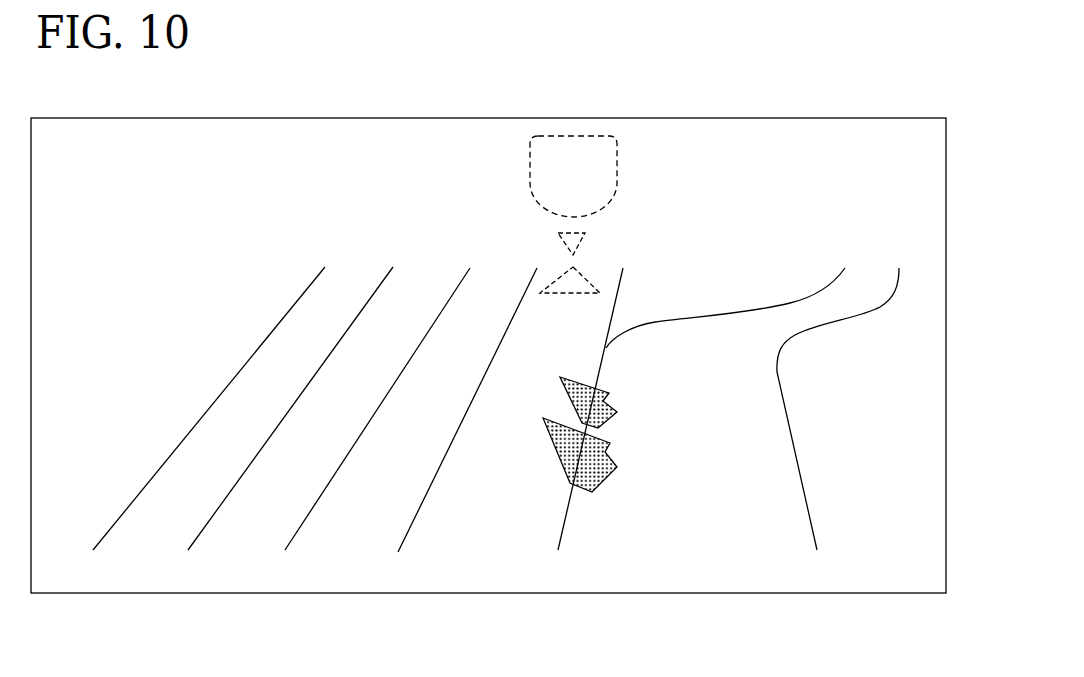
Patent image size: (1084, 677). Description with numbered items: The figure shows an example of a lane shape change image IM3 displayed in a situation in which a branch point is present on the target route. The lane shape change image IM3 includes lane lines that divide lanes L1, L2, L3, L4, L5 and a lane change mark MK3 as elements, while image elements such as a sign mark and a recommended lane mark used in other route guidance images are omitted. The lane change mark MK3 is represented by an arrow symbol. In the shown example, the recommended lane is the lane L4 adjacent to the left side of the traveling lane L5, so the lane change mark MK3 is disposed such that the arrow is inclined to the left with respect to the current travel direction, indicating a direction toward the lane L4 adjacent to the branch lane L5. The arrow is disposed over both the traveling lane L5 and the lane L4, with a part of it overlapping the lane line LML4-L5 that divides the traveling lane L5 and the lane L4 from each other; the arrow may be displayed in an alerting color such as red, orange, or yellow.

The lane shape change image IM3 is at (900, 118).
The lane L1 is at (167, 559).
The lane L2 is at (263, 559).
The lane L3 is at (364, 559).
The lane L4 is at (498, 559).
The traveling lane L5 is at (701, 559).
The lane line LML4-L5 is at (565, 532).
The lane change mark MK3 is at (634, 421).